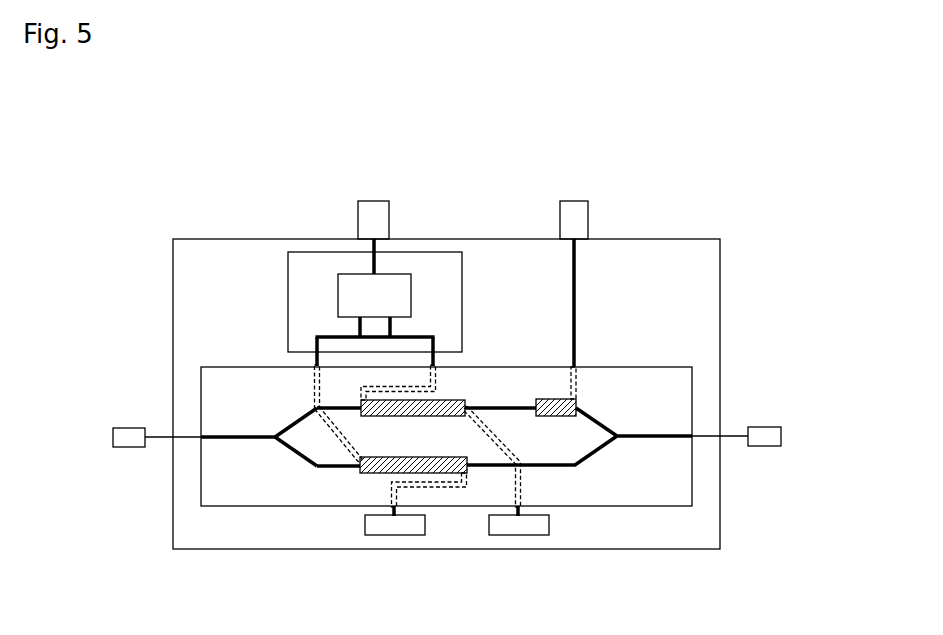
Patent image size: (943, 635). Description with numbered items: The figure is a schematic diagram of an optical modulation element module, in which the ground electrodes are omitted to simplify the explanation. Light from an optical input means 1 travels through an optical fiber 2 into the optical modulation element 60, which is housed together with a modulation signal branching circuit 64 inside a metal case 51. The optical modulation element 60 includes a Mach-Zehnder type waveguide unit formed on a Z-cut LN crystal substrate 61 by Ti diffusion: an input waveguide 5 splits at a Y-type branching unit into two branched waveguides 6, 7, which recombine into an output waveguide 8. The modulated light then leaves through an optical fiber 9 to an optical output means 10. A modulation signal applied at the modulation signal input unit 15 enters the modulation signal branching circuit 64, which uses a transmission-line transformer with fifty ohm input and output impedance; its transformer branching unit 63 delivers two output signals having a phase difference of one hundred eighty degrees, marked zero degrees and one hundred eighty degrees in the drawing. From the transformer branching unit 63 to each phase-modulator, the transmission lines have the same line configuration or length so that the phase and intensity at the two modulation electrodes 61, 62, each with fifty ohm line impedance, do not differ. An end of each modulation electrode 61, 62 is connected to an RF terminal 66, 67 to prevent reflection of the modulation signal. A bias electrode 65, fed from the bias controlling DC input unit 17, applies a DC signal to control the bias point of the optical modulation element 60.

The optical input means 1 is at (130, 448).
The optical fiber 2 is at (158, 435).
The input waveguide 5 is at (244, 440).
The branched waveguide 6 is at (562, 466).
The branched waveguide 7 is at (504, 408).
The output waveguide 8 is at (652, 433).
The optical fiber 9 is at (732, 437).
The optical output means 10 is at (765, 425).
The modulation signal input unit 15 is at (375, 200).
The bias controlling DC input unit 17 is at (576, 200).
The metal case 51 is at (662, 237).
The optical modulation element 60 is at (223, 358).
The modulation electrode 61 is at (200, 493).
The modulation electrode 62 is at (433, 410).
The transformer branching unit 63 is at (375, 305).
The modulation signal branching circuit 64 is at (310, 252).
The bias electrode 65 is at (577, 403).
The RF terminal 66 is at (397, 537).
The RF terminal 67 is at (519, 535).